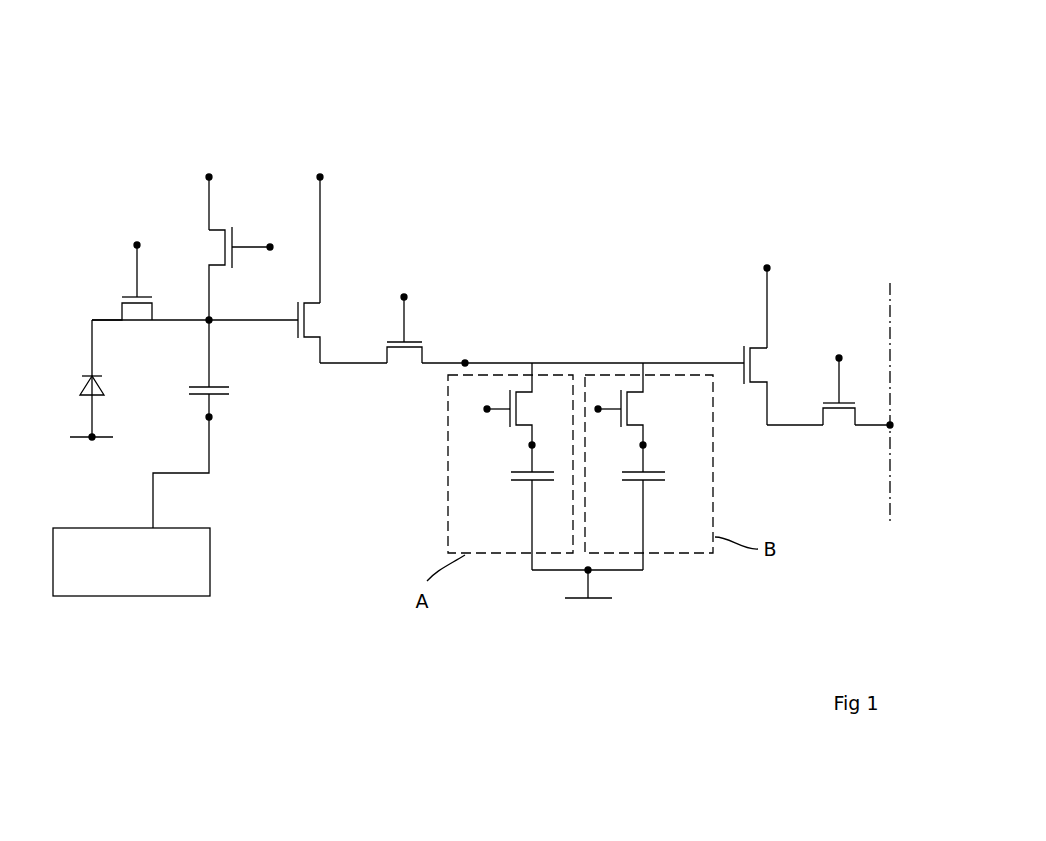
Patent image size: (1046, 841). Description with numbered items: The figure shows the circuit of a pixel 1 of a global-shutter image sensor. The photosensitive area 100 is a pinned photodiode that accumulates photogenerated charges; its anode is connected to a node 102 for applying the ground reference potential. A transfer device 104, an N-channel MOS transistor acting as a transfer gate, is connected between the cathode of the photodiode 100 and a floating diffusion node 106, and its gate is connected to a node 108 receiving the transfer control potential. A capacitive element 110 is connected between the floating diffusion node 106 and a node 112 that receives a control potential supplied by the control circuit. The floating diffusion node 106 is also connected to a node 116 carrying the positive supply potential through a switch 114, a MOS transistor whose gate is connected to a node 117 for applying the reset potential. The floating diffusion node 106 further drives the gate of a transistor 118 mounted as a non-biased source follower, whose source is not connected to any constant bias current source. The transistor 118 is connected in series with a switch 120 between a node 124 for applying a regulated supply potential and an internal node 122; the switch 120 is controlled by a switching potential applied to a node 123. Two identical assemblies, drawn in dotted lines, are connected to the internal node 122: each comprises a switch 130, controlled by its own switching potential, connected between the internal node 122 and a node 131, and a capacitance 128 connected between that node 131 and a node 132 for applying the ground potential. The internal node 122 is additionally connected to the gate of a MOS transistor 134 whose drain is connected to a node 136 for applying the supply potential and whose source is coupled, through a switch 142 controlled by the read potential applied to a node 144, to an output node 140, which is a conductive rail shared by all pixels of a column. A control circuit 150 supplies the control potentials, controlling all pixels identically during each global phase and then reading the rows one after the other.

The pixel 1 is at (272, 98).
The photosensitive area 100 is at (101, 381).
The node for applying a reference potential 102 is at (90, 437).
The transfer device 104 is at (115, 292).
The floating diffusion node 106 is at (208, 318).
The node for applying control potential TG 108 is at (134, 246).
The capacitive element 110 is at (230, 388).
The node for applying potential Vech 112 is at (212, 418).
The switch 114 is at (238, 238).
The node for applying supply potential VDD 116 is at (212, 178).
The node for applying potential RST 117 is at (268, 251).
The transistor 118 is at (328, 372).
The switch 120 is at (408, 356).
The internal node 122 is at (465, 361).
The node for applying control potential SW 123 is at (407, 297).
The node for applying control potential VD 124 is at (323, 178).
The capacitance 128 is at (512, 481).
The switch 130 is at (504, 427).
The node 131 is at (530, 445).
The node for applying a potential 132 is at (591, 572).
The MOS transistor 134 is at (758, 363).
The node for applying supply potential VDD 136 is at (770, 270).
The output node 140 is at (893, 426).
The switch 142 is at (840, 420).
The node for applying control potential RD 144 is at (842, 360).
The control circuit 150 is at (198, 568).